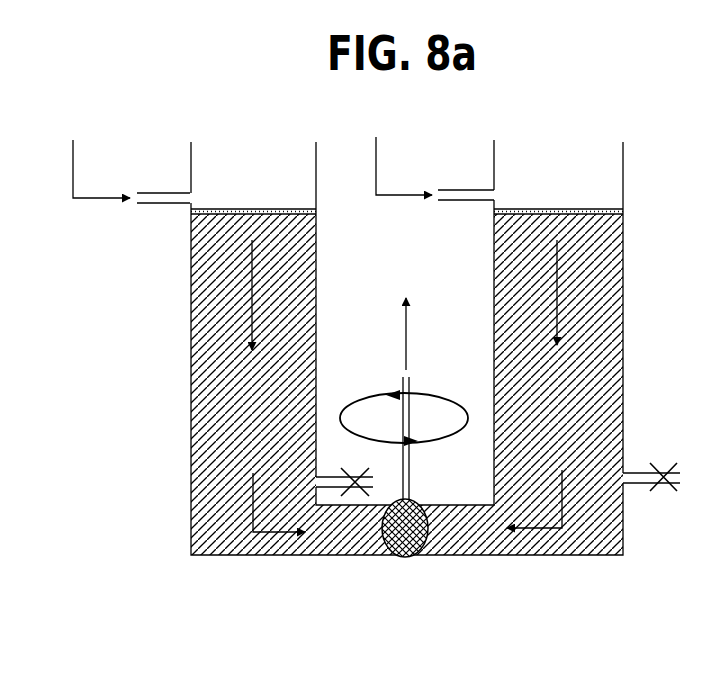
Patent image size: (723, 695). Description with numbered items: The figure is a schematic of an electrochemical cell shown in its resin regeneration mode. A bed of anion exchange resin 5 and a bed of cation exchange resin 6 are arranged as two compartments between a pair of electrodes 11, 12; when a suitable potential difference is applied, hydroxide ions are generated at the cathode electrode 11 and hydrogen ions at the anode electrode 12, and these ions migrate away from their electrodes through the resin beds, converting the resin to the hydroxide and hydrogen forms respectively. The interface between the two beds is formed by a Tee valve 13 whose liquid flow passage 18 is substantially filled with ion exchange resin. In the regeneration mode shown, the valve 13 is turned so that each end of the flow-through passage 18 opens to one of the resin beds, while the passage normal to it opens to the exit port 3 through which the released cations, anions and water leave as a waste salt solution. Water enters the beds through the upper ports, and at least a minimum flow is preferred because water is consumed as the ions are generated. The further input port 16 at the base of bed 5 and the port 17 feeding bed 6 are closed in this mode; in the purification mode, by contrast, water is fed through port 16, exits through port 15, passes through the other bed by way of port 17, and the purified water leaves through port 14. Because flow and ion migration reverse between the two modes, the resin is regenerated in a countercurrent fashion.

The output port 3 is at (415, 475).
The bed of anion exchange resin 5 is at (611, 338).
The bed of cation exchange resin 6 is at (205, 363).
The electrode 11 is at (282, 210).
The electrode 12 is at (556, 207).
The Tee valve 13 is at (392, 552).
The port 14 is at (147, 205).
The port 15 is at (468, 190).
The further input port 16 is at (633, 468).
The port 17 is at (335, 482).
The liquid flow passage 18 is at (417, 558).